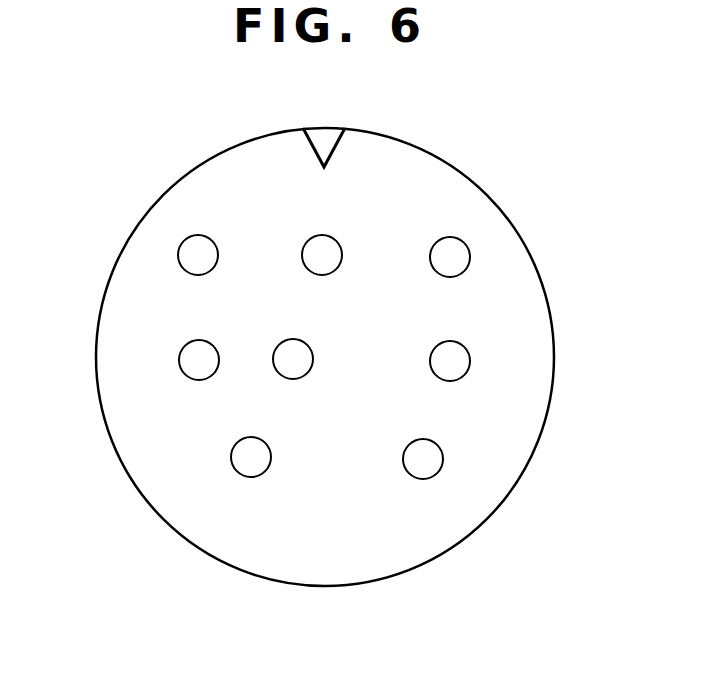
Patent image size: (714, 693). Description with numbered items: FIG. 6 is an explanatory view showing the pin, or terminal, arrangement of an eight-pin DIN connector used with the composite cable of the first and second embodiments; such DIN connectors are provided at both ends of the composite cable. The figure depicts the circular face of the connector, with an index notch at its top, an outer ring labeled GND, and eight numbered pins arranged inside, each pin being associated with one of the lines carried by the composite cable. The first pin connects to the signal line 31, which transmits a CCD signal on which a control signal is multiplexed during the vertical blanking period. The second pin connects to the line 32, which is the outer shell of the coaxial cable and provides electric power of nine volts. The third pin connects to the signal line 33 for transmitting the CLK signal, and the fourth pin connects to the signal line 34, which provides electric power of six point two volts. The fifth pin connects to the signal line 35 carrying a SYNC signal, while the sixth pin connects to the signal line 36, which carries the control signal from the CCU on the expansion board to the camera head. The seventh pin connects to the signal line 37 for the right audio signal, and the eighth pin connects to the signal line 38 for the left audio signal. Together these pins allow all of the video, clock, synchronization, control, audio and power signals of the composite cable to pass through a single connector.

The signal line 31 is at (437, 469).
The line 32 is at (240, 473).
The signal line 33 is at (467, 360).
The signal line 34 is at (278, 358).
The signal line 35 is at (182, 360).
The signal line 36 is at (462, 249).
The signal line 37 is at (312, 245).
The signal line 38 is at (188, 245).
The ground shell of connector GND is at (428, 553).